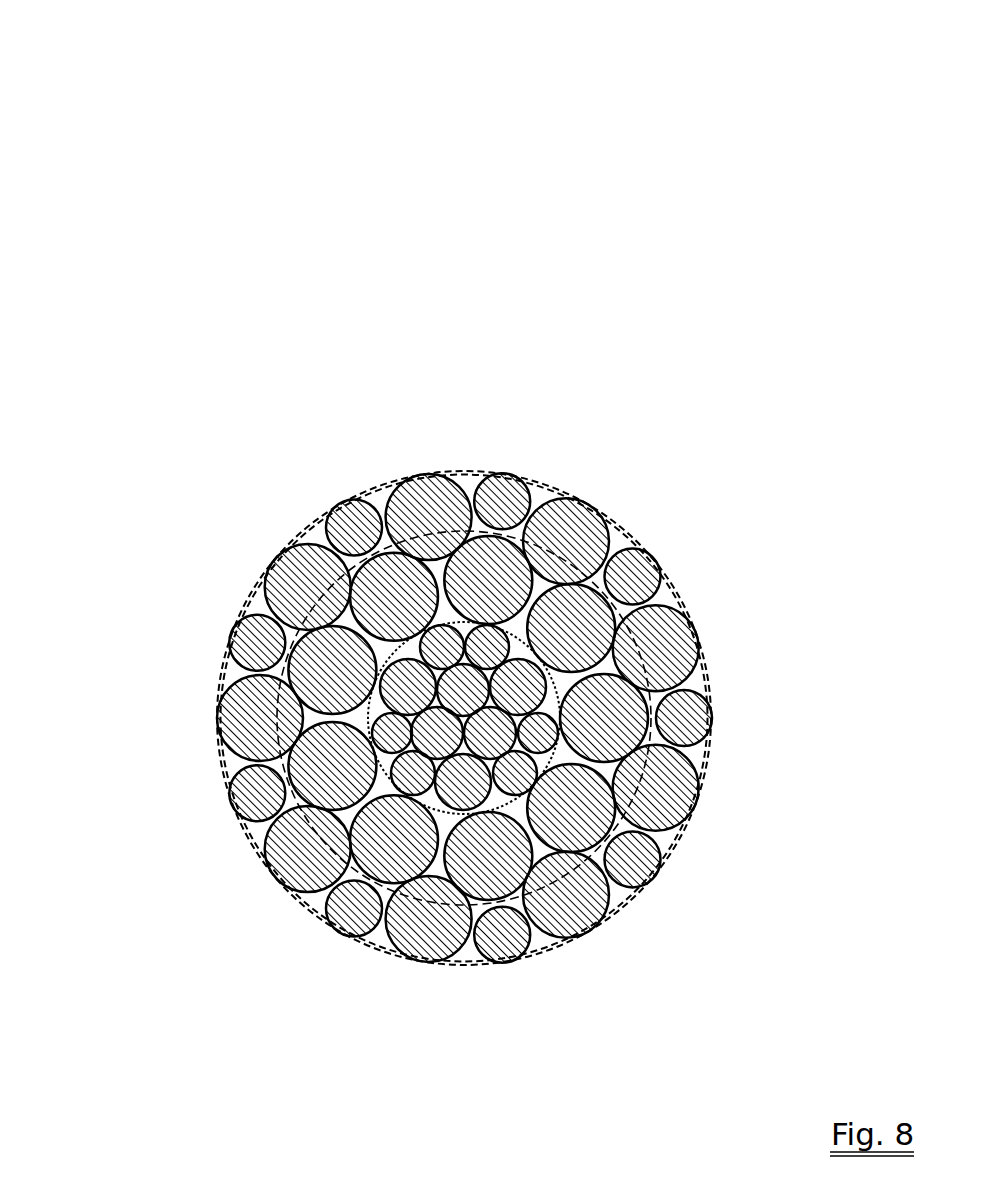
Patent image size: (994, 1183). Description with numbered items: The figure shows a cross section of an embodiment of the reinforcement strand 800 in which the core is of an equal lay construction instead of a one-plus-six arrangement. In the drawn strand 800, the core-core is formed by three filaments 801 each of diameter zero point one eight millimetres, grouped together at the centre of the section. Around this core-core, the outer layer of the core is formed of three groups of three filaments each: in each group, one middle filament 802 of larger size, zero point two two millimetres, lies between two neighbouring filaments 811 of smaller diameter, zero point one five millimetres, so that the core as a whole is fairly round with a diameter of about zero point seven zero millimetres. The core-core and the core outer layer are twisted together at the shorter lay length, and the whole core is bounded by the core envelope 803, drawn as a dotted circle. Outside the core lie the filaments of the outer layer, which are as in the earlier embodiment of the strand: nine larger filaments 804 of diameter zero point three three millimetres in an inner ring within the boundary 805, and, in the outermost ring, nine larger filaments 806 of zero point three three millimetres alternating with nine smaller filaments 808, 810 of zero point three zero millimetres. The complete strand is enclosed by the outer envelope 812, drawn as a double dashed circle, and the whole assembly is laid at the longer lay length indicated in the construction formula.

The cable 800 is at (185, 145).
The filaments 801 is at (490, 740).
The middle filament 802 is at (542, 670).
The inner layer strand 803 is at (555, 753).
The inner layer strand 804 is at (585, 820).
The intermediate layer boundary 805 is at (350, 867).
The outer layer large strand 806 is at (245, 727).
The outer layer small strand 808 is at (263, 778).
The outer layer small strand 810 is at (343, 510).
The core strand 811 is at (495, 643).
The outer sheath 812 is at (420, 478).